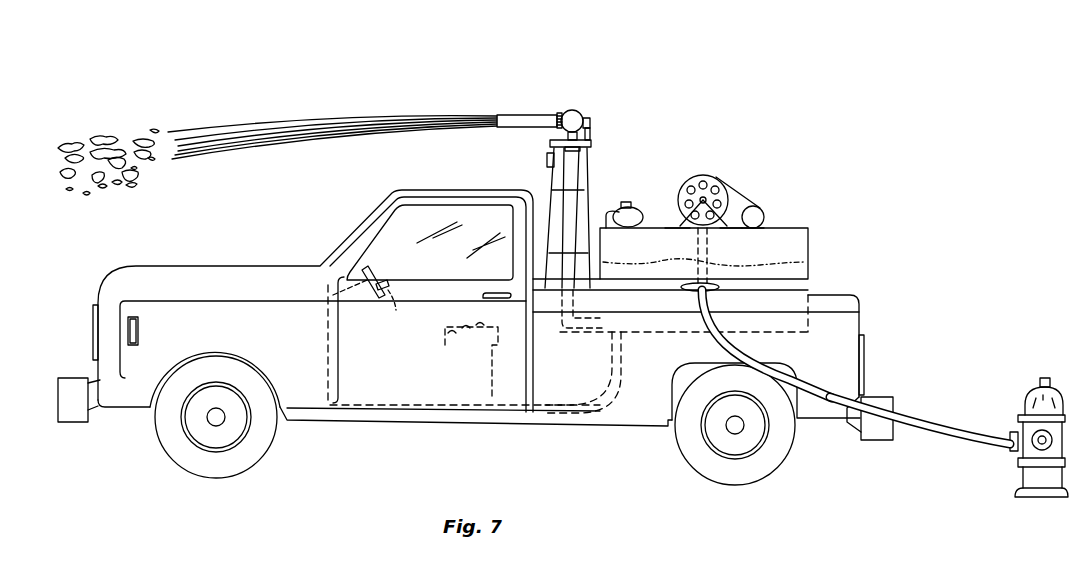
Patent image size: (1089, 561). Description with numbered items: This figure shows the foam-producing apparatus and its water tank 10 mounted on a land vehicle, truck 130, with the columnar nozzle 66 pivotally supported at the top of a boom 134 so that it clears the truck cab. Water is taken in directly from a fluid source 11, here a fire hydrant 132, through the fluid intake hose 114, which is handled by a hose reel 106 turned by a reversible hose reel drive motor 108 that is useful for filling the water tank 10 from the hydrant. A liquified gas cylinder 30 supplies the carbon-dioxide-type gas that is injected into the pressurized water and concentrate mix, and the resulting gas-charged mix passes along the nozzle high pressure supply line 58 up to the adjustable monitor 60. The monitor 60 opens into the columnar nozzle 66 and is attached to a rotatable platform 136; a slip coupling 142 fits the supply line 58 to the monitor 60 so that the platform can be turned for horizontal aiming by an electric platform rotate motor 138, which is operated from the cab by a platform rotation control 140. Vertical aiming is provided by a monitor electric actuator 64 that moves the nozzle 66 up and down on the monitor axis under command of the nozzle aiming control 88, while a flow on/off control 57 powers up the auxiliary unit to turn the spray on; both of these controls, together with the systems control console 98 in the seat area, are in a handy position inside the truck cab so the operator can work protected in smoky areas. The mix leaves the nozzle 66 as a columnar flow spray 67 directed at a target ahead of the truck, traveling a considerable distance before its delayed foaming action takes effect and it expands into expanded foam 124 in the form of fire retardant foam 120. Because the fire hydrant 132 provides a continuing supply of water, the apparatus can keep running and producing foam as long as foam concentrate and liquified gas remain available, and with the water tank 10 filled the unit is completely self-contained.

The water tank 10 is at (808, 235).
The fluid source 11 is at (793, 276).
The liquified gas cylinder 30 is at (633, 219).
The flow on/off control 57 is at (373, 262).
The nozzle high pressure supply line 58 is at (573, 210).
The monitor 60 is at (564, 111).
The monitor electric actuator 64 is at (591, 140).
The columnar nozzle 66 is at (513, 116).
The columnar flow spray 67 is at (326, 118).
The nozzle aiming control 88 is at (378, 276).
The systems control console 98 is at (463, 342).
The hose reel 106 is at (700, 178).
The hose reel drive motor 108 is at (756, 208).
The fluid intake hose 114 is at (933, 418).
The expanded retardant foam 120 is at (118, 146).
The expanded foam 124 is at (140, 178).
The truck 130 is at (192, 266).
The fire hydrant 132 is at (1043, 375).
The boom 134 is at (588, 192).
The rotatable platform 136 is at (550, 124).
The electric platform rotate motor 138 is at (546, 166).
The platform rotation control 140 is at (390, 289).
The slip coupling 142 is at (591, 145).